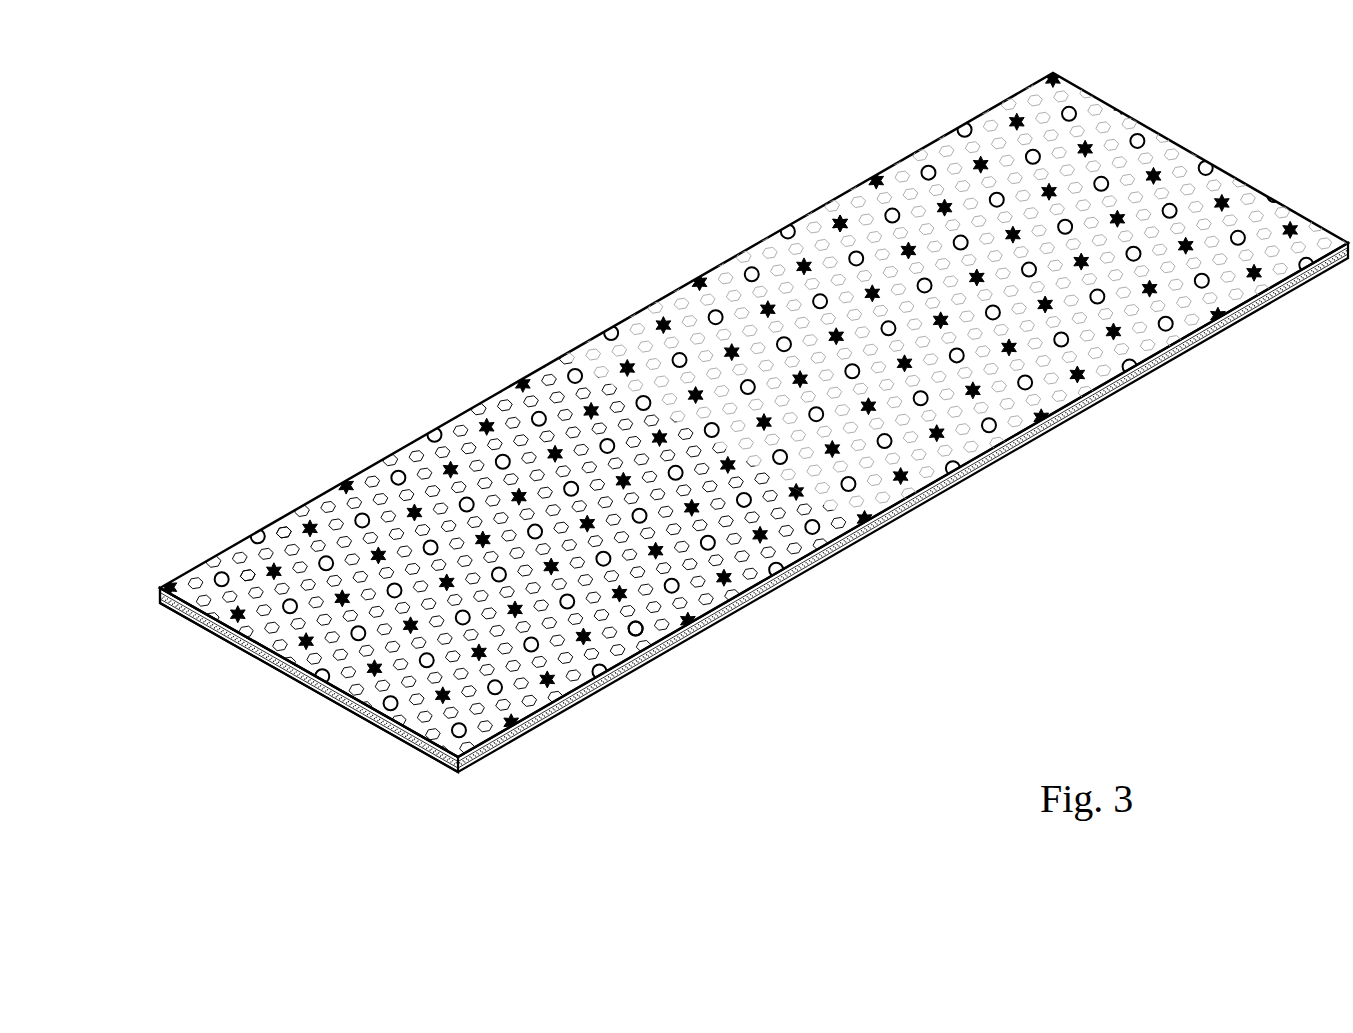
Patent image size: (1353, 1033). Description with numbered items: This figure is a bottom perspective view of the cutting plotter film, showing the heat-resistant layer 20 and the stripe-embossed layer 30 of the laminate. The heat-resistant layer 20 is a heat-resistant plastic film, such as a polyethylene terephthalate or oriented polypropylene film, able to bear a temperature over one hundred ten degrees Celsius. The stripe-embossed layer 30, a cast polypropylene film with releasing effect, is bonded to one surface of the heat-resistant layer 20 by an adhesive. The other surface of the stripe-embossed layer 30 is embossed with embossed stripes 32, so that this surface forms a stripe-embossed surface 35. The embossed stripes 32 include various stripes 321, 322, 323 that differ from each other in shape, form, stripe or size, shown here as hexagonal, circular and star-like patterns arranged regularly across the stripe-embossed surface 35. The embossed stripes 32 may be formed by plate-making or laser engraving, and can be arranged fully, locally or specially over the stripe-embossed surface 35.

The heat-resistant layer 20 is at (386, 744).
The stripe-embossed layer 30 is at (318, 692).
The embossed stripes 32 is at (713, 423).
The stripes 321 is at (247, 569).
The stripes 322 is at (641, 635).
The stripes 323 is at (839, 216).
The stripe-embossed surface 35 is at (489, 409).